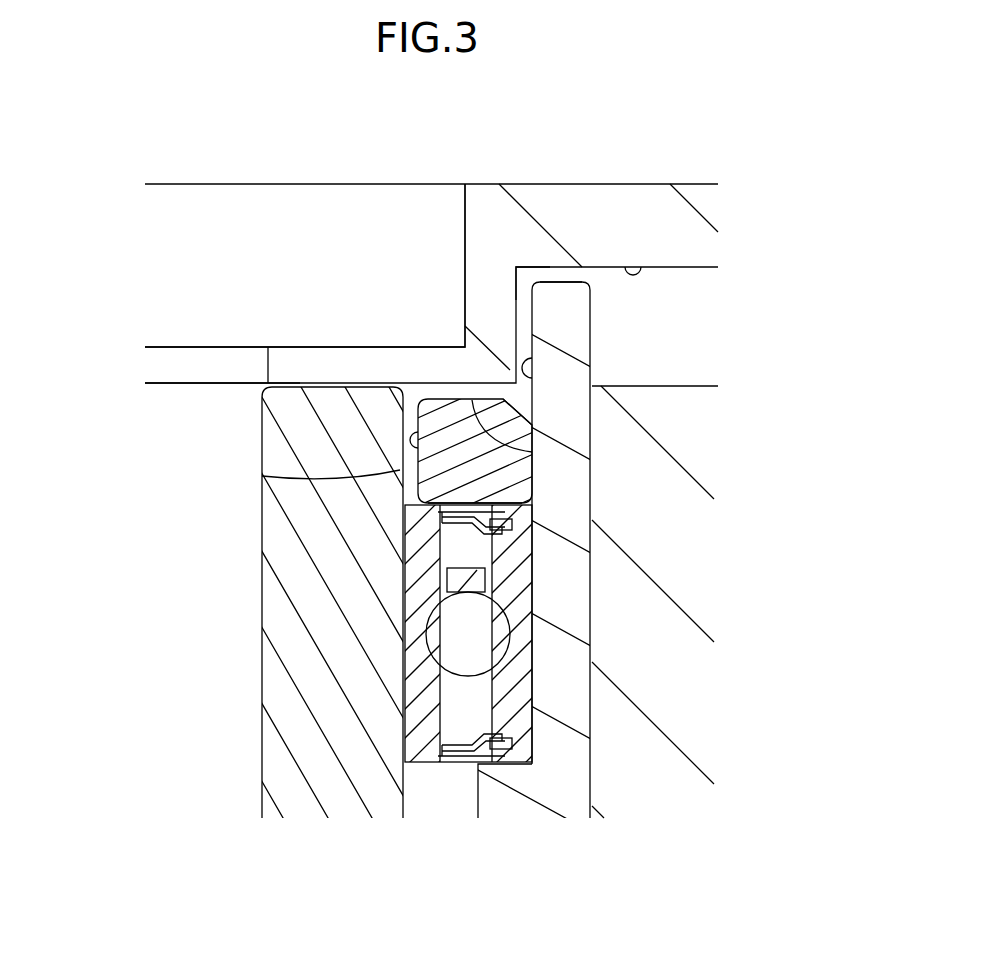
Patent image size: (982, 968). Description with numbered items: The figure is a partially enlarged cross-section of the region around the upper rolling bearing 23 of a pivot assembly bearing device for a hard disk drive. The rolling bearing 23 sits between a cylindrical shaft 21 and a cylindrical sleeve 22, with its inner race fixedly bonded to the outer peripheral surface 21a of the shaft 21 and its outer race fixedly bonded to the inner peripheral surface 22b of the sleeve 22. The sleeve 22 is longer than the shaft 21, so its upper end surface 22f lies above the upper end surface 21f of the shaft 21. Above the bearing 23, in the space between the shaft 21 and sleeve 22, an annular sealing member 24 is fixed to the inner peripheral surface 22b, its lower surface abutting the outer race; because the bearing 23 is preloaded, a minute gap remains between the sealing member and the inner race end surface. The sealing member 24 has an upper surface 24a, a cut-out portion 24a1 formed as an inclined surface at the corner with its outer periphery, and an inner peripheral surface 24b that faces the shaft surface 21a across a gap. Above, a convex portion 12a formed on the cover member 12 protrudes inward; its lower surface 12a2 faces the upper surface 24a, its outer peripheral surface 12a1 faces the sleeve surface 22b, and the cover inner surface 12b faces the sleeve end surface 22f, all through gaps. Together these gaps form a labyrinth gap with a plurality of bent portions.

The cover member 12 is at (580, 195).
The convex portion 12a is at (366, 362).
The outer peripheral surface of the convex portion 12a1 is at (530, 270).
The lower surface of the convex portion 12a2 is at (262, 393).
The inner surface of the cover member 12b is at (640, 265).
The shaft 21 is at (337, 793).
The upper end surface of the shaft 21f is at (294, 387).
The outer peripheral surface of the shaft 21a is at (262, 476).
The sleeve 22 is at (548, 793).
The upper end surface of the sleeve 22f is at (563, 281).
The inner peripheral surface of the sleeve 22b is at (532, 380).
The rolling bearing 23 is at (533, 632).
The sealing member 24 is at (520, 415).
The upper surface of the sealing member 24a is at (532, 452).
The cut-out portion 24a1 is at (510, 398).
The inner peripheral surface of the sealing member 24b is at (500, 480).